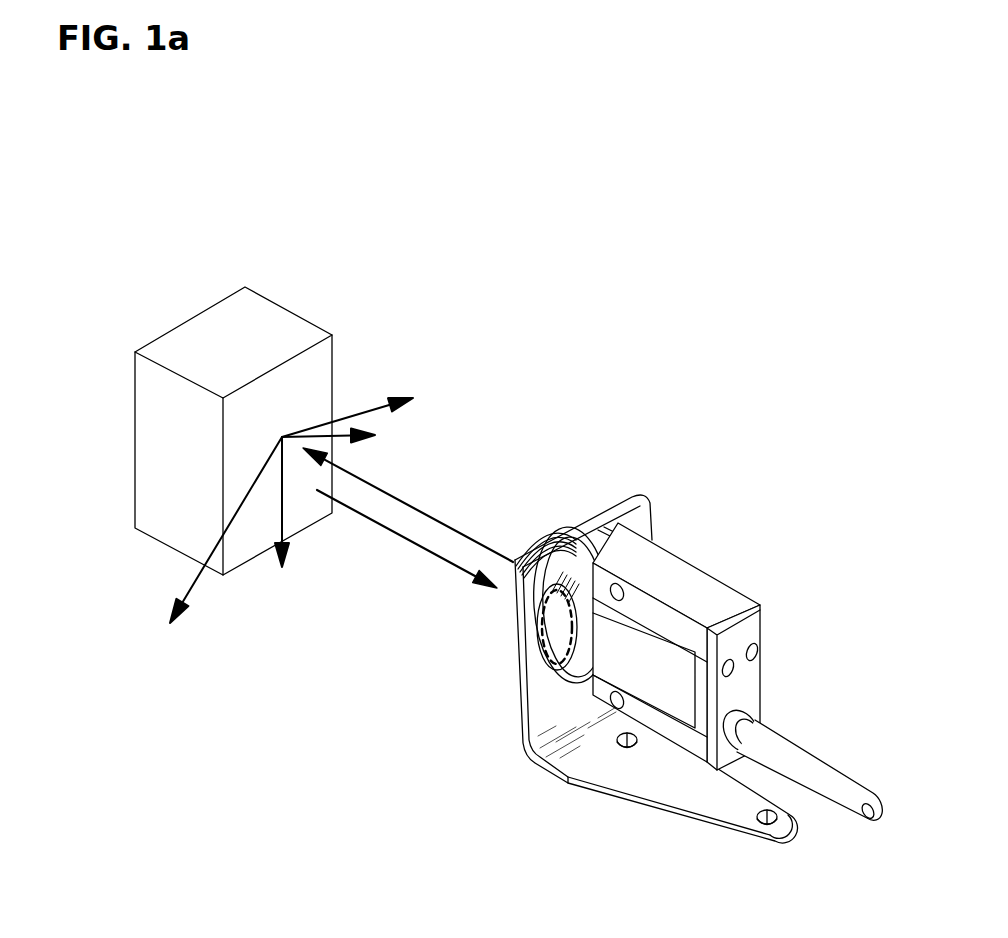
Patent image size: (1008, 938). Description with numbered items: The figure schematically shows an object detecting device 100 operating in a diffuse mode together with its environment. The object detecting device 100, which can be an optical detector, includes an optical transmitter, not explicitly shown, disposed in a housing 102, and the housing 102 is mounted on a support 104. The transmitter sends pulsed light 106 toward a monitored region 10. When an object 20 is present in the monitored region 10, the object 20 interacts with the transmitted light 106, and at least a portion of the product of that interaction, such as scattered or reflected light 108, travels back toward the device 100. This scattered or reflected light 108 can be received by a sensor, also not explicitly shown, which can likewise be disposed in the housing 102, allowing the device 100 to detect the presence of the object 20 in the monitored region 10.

The monitored region 10 is at (130, 288).
The object 20 is at (283, 307).
The object detecting device 100 is at (735, 252).
The housing 102 is at (698, 572).
The support 104 is at (642, 802).
The pulsed light 106 is at (427, 515).
The scattered or reflected light 108 is at (397, 533).